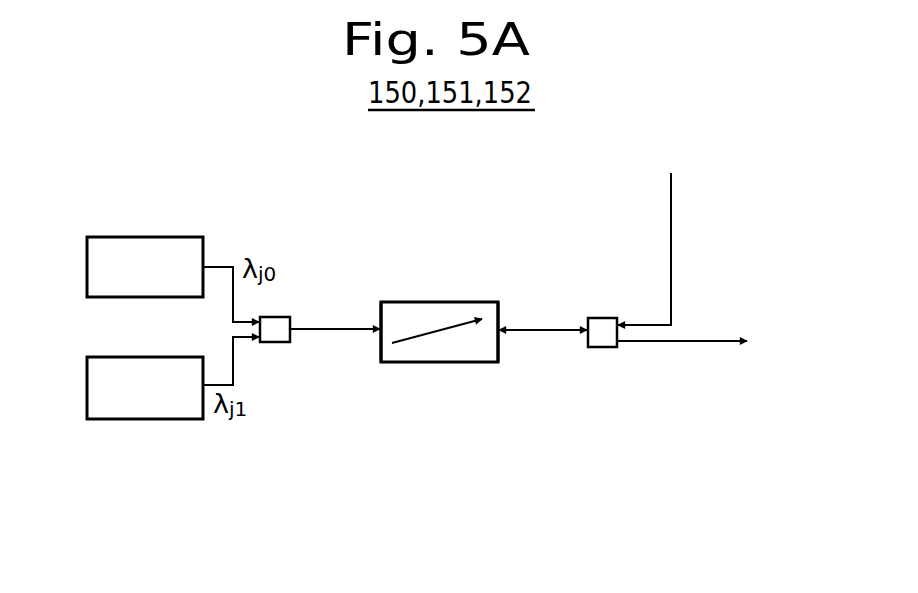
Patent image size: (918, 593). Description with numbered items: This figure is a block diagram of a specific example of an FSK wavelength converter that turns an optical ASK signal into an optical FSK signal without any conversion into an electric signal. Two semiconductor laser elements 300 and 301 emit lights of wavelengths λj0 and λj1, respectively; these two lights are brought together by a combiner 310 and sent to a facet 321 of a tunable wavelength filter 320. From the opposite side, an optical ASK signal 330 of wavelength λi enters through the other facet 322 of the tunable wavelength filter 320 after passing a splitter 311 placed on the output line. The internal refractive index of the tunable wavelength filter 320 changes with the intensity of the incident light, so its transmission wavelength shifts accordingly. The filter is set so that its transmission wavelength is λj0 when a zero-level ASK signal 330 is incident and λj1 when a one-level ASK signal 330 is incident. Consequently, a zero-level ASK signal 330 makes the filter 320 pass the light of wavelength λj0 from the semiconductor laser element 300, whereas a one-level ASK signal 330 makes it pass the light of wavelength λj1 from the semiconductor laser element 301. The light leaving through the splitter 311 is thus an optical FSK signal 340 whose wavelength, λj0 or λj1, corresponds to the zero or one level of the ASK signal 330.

The semiconductor laser element 300 is at (137, 237).
The semiconductor laser element 301 is at (138, 357).
The combiner 310 is at (270, 342).
The tunable wavelength filter 320 is at (433, 300).
The facet 321 is at (375, 357).
The other facet 322 is at (503, 357).
The optical ASK signal 330 is at (686, 219).
The splitter 311 is at (600, 347).
The optical FSK signal 340 is at (687, 341).